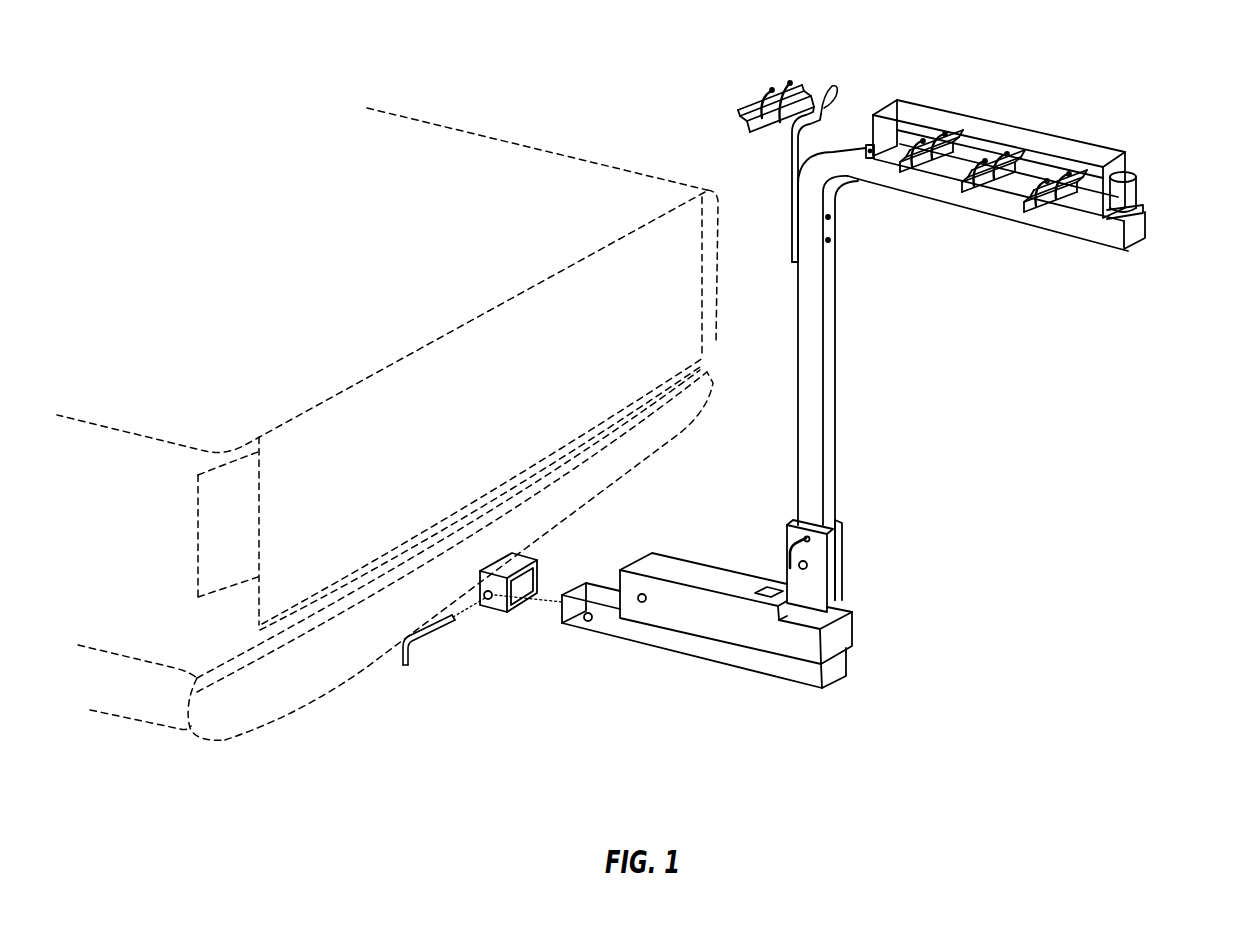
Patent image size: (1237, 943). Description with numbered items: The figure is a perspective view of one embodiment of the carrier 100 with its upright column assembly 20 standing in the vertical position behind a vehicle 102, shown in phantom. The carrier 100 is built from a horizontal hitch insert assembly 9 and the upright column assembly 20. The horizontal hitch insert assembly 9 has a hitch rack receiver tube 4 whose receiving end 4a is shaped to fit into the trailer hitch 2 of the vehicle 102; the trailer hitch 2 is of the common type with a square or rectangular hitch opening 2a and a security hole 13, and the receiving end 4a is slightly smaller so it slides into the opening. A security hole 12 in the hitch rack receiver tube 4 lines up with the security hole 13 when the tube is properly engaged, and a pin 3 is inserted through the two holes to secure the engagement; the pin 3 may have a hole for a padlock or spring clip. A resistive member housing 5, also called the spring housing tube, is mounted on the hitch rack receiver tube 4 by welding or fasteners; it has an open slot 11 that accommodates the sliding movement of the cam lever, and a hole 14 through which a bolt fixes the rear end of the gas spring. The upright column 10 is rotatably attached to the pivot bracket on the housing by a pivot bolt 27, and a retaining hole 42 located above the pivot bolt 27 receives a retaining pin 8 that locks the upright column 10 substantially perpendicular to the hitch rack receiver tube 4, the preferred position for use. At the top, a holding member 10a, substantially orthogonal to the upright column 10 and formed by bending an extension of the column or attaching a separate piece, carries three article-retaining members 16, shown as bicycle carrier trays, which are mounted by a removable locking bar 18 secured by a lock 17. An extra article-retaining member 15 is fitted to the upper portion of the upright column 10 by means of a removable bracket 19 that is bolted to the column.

The vehicle 102 is at (460, 130).
The carrier 100 is at (888, 397).
The upright column assembly 20 is at (1036, 223).
The removable locking bar 18 is at (1105, 148).
The lock 17 is at (1133, 174).
The article-retaining member 16 is at (908, 180).
The holding member 10a is at (1005, 220).
The upright column 10 is at (835, 353).
The removable bracket 19 is at (817, 127).
The extra article-retaining member 15 is at (798, 93).
The horizontal hitch insert assembly 9 is at (743, 630).
The retaining pin 8 is at (815, 558).
The retaining hole 42 is at (807, 540).
The pivot bolt 27 is at (806, 568).
The resistive member housing 5 is at (736, 624).
The open slot 11 is at (767, 590).
The hole 14 is at (642, 602).
The hitch rack receiver tube 4 is at (704, 610).
The receiving end 4a is at (580, 587).
The security hole 12 is at (588, 621).
The trailer hitch 2 is at (512, 659).
The hitch opening 2a is at (514, 625).
The security hole 13 is at (488, 600).
The pin 3 is at (407, 665).